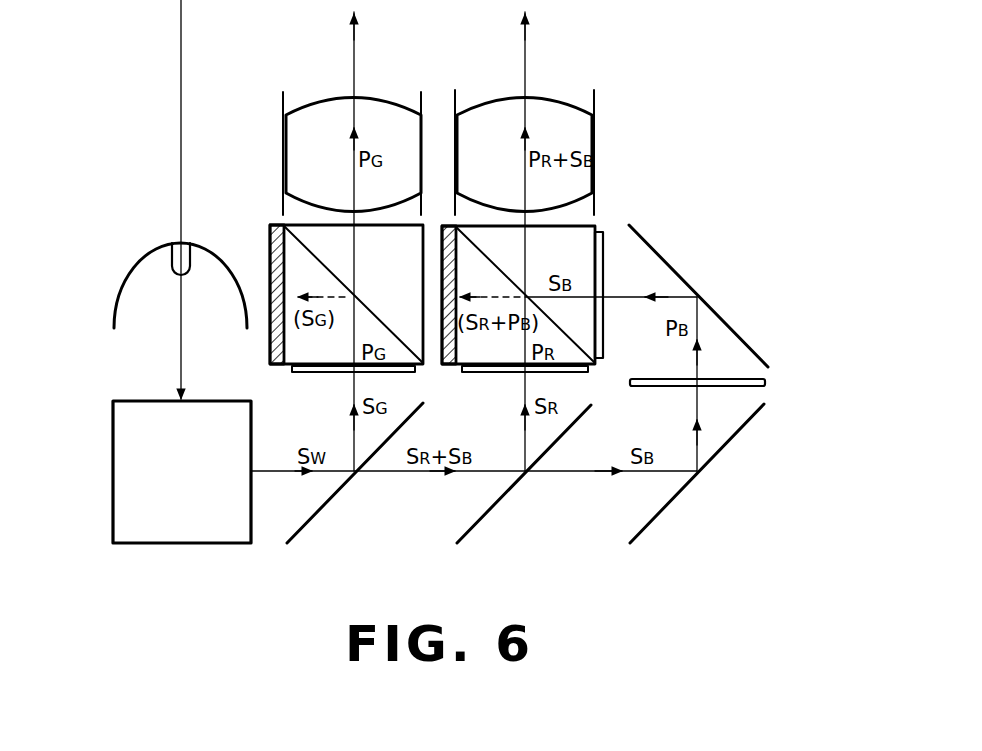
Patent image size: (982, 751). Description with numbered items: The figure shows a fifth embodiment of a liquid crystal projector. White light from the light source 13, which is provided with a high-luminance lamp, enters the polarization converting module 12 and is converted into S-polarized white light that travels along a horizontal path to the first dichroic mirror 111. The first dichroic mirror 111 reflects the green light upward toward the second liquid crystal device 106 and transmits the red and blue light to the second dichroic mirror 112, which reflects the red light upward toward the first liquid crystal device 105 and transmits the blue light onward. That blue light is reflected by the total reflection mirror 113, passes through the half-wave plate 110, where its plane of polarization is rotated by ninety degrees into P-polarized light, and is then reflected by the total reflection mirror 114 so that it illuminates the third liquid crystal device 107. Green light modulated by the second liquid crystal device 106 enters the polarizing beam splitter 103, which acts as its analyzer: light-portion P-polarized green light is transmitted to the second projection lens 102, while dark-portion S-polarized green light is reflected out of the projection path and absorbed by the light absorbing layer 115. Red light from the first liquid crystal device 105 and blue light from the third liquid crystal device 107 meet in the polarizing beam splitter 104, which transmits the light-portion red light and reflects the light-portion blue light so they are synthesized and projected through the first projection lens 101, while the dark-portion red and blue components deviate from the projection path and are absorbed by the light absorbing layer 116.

The polarization converting module 12 is at (157, 545).
The light source 13 is at (128, 276).
The first projection lens 101 is at (560, 100).
The second projection lens 102 is at (380, 101).
The polarizing beam splitter 103 is at (287, 226).
The polarizing beam splitter 104 is at (575, 366).
The first liquid crystal device 105 is at (482, 375).
The second liquid crystal device 106 is at (308, 375).
The third liquid crystal device 107 is at (604, 236).
The λ/2 plate 110 is at (766, 383).
The first dichroic mirror 111 is at (318, 515).
The second dichroic mirror 112 is at (487, 514).
The total reflection mirror 113 is at (660, 514).
The total reflection mirror 114 is at (678, 272).
The light absorbing layer 115 is at (268, 245).
The light absorbing layer 116 is at (441, 250).